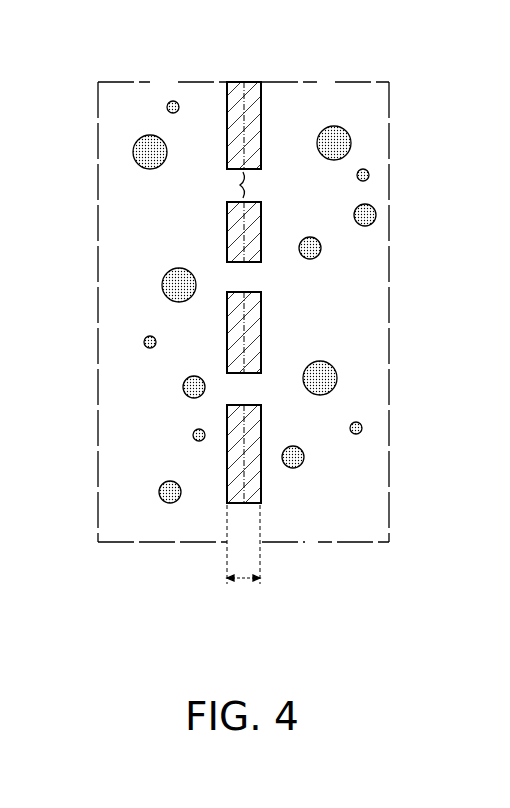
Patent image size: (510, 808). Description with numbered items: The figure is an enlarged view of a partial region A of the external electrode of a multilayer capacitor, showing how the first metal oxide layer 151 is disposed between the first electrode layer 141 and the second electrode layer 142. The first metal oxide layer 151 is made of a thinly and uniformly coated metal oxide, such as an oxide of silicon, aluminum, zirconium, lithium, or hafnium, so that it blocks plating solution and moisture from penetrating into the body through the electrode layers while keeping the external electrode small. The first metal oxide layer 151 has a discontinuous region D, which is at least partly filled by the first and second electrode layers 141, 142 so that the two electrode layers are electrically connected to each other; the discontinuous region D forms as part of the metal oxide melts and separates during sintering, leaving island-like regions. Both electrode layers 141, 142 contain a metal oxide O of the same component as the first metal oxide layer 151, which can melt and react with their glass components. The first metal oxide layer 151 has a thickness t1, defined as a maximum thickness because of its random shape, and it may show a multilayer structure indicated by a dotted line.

The second electrode layer 142 is at (163, 90).
The first metal oxide layer 151 is at (248, 90).
The first electrode layer 141 is at (299, 90).
The metal oxide O is at (136, 153).
The discontinuous region D is at (240, 185).
The thickness of the first metal oxide layer t1 is at (243, 557).
The partial region A is at (258, 655).